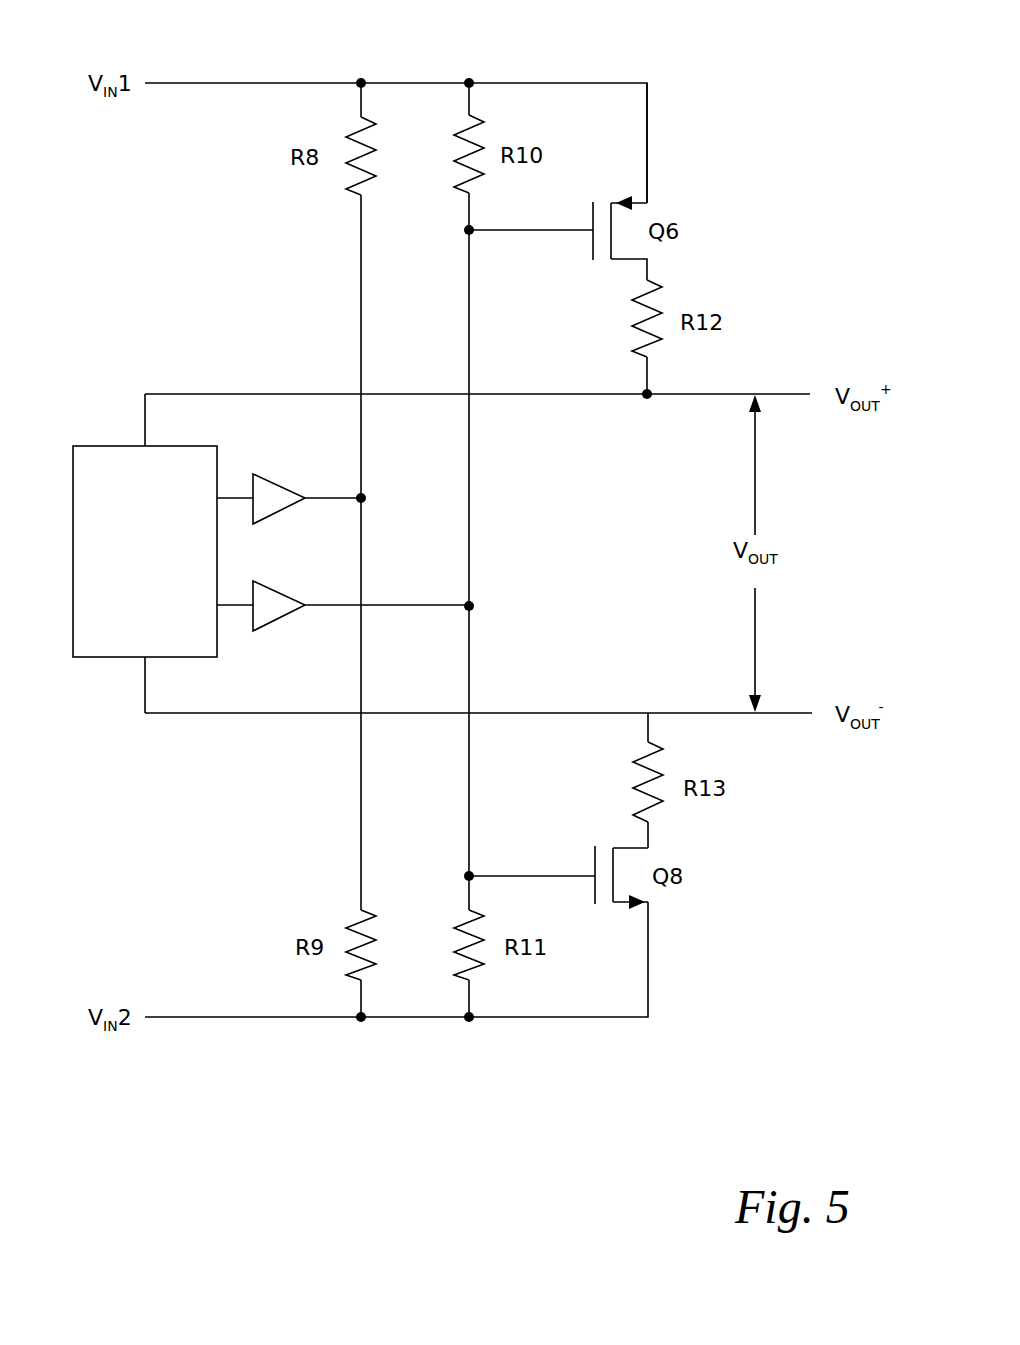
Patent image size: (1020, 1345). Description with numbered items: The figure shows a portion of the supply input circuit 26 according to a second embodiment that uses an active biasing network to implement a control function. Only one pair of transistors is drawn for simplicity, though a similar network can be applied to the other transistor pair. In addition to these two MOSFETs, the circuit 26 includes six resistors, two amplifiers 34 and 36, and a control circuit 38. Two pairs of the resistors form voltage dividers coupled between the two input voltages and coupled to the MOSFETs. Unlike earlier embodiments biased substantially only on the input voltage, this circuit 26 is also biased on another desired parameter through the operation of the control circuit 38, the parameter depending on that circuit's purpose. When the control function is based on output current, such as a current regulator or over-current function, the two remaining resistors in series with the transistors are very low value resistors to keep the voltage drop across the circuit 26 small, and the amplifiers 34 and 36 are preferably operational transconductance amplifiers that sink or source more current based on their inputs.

The supply input circuit 26 is at (793, 85).
The amplifier 34 is at (293, 490).
The amplifier 36 is at (293, 597).
The control circuit 38 is at (108, 446).